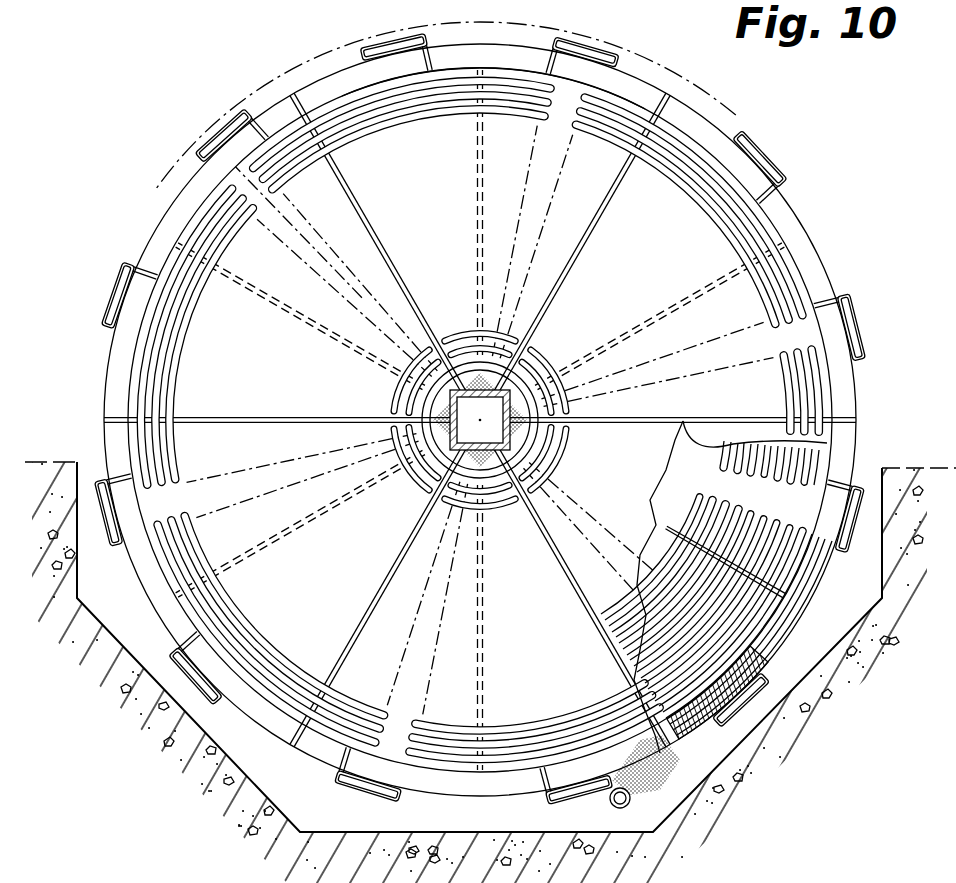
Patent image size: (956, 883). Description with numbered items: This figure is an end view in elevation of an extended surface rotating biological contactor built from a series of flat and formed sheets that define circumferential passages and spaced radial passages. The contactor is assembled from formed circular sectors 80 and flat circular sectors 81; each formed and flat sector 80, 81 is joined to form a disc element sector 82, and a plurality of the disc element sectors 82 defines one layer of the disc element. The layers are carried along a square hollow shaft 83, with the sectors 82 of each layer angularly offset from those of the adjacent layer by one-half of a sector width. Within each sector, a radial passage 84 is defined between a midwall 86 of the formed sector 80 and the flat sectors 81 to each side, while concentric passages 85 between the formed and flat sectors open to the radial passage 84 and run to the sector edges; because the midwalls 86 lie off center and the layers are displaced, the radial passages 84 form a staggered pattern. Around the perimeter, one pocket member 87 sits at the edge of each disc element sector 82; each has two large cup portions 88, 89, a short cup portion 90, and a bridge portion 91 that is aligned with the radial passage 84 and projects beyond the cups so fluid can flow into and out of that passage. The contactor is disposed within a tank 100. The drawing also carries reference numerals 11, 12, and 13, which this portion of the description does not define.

The pipe section 11 is at (668, 158).
The reference circle 12 is at (695, 85).
The pipe joint gap 13 is at (190, 105).
The formed circular sector 80 is at (652, 467).
The flat circular sector 81 is at (716, 461).
The disc element sector 82 is at (772, 234).
The square hollow shaft 83 is at (440, 470).
The radial passage 84 is at (817, 322).
The concentric passages 85 is at (748, 513).
The midwall 86 is at (800, 510).
The pocket member 87 is at (717, 128).
The large cup portion 88 is at (376, 86).
The large cup portion 89 is at (520, 69).
The short cup portion 90 is at (652, 101).
The bridge portion 91 is at (600, 43).
The tank 100 is at (900, 468).